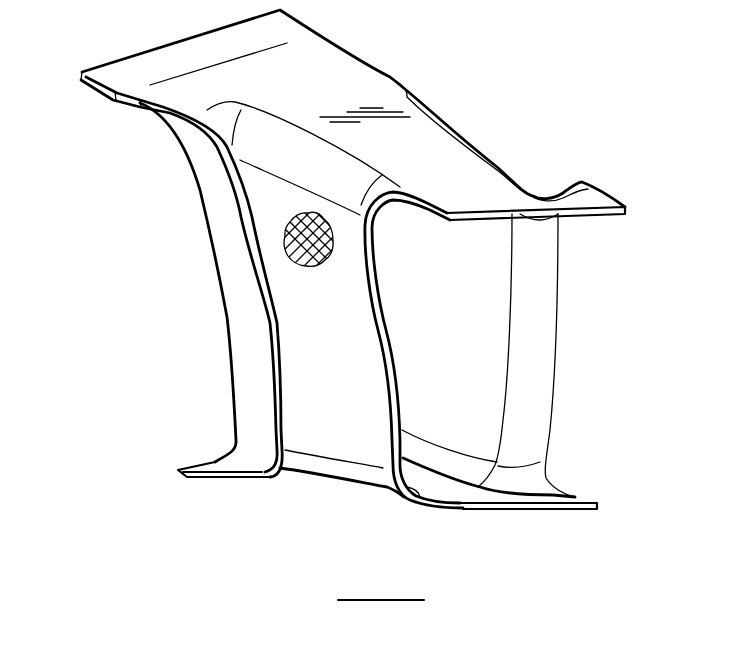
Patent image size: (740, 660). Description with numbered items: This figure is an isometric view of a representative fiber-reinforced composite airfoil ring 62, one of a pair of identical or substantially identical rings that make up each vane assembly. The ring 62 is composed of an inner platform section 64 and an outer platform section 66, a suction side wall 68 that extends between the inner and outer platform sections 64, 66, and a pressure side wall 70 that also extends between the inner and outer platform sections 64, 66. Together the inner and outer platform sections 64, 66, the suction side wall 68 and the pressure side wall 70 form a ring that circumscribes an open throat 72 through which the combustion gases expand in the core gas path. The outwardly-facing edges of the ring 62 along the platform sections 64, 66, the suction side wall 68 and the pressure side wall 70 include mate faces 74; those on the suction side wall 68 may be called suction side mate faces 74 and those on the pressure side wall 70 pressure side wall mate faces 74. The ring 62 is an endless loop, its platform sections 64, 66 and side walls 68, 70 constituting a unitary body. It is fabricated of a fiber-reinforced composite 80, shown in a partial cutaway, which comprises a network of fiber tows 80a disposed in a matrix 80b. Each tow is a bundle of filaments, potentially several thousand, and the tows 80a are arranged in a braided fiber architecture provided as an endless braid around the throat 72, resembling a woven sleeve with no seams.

The fiber-reinforced composite airfoil ring 62 is at (212, 495).
The inner platform section 64 is at (473, 498).
The outer platform section 66 is at (340, 80).
The suction side wall 68 is at (343, 413).
The pressure side wall 70 is at (498, 322).
The open throat 72 is at (432, 282).
The mate face 74 is at (108, 87).
The fiber-reinforced composite 80 is at (307, 268).
The fiber tows 80a is at (287, 238).
The matrix 80b is at (293, 258).